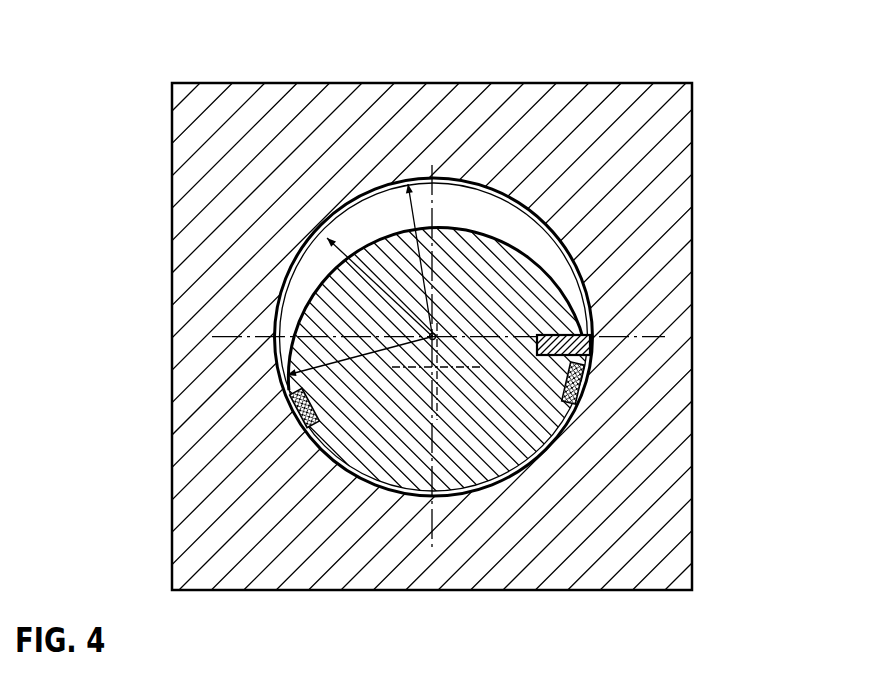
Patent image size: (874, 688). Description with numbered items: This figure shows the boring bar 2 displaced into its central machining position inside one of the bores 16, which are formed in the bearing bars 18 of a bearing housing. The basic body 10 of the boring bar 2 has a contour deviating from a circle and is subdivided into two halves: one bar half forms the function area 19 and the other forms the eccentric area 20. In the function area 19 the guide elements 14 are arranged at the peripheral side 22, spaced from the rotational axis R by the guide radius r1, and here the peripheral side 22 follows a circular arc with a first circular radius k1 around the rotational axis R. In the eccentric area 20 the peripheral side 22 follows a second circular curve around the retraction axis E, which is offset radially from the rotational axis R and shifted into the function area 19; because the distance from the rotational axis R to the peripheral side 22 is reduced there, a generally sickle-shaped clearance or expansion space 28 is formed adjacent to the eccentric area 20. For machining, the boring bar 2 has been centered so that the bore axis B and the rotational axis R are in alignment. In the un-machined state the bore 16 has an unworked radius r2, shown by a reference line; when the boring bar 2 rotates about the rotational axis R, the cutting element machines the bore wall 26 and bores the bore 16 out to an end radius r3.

The bearing bar 18 is at (673, 184).
The bore wall 26 is at (270, 300).
The clearance or expansion space 28 is at (305, 272).
The peripheral side 22 is at (503, 230).
The bore 16 is at (478, 200).
The first circular radius k1 is at (542, 268).
The eccentric area 20 is at (486, 284).
The function area 19 is at (390, 426).
The guide element 14 is at (298, 412).
The guide radius r1 is at (432, 335).
The unworked radius r2 is at (362, 243).
The end radius r3 is at (415, 250).
The rotational axis R is at (230, 299).
The bore axis B is at (432, 336).
The retraction axis E is at (440, 368).
The boring bar 2 is at (325, 553).
The basic body 10 is at (377, 453).